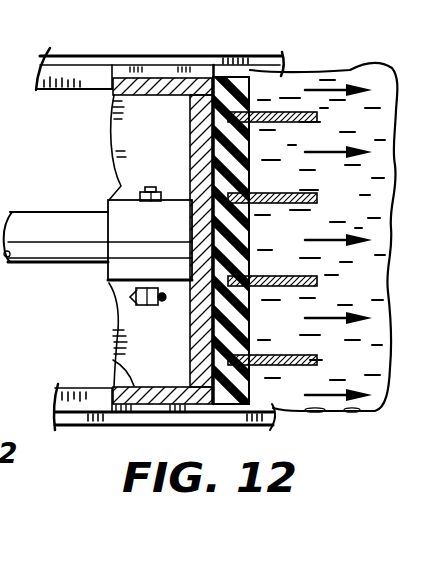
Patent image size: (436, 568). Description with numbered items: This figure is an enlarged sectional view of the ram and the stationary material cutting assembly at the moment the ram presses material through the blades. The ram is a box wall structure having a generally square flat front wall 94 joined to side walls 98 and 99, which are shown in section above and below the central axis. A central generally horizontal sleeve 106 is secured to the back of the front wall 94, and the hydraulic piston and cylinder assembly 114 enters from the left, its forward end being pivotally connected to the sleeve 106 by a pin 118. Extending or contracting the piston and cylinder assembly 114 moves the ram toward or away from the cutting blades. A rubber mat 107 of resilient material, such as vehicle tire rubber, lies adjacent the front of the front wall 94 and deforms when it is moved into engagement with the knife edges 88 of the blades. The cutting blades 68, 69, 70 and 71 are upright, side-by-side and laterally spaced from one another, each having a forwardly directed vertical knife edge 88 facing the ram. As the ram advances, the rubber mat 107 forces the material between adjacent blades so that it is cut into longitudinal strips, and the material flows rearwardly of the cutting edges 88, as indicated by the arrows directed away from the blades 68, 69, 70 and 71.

The cutting blade 68 is at (277, 354).
The cutting blade 69 is at (278, 275).
The cutting blade 70 is at (280, 192).
The cutting blade 71 is at (282, 111).
The knife edge 88 is at (212, 292).
The front wall 94 is at (190, 355).
The side wall 98 is at (151, 96).
The side wall 99 is at (114, 365).
The sleeve 106 is at (132, 213).
The rubber mat 107 is at (247, 382).
The piston and cylinder assembly 114 is at (58, 255).
The pin 118 is at (150, 190).